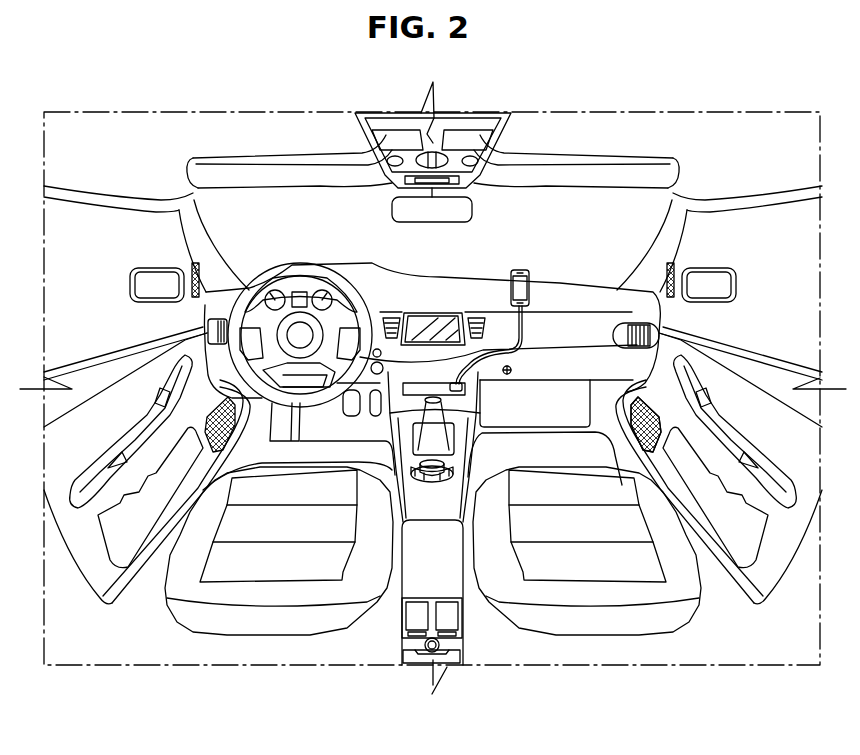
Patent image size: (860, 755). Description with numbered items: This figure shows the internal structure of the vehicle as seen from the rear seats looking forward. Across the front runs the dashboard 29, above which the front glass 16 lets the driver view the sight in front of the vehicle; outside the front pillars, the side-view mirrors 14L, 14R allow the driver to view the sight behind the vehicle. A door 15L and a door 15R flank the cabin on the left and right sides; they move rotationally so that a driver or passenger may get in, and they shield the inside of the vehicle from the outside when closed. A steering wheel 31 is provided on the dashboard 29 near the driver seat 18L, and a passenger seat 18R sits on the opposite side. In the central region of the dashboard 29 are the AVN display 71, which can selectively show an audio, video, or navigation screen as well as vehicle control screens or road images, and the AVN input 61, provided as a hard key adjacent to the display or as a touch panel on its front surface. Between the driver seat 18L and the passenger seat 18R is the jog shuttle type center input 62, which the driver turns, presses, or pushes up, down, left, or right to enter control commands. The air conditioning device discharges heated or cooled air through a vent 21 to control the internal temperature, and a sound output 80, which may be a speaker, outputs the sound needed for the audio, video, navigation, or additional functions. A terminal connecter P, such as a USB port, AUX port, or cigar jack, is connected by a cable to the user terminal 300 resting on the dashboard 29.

The side-view mirror 14L is at (150, 280).
The side-view mirror 14R is at (715, 280).
The door 15L is at (72, 433).
The door 15R is at (794, 433).
The front glass 16 is at (542, 197).
The driver seat 18L is at (258, 620).
The passenger seat 18R is at (590, 620).
The vent 21 is at (208, 330).
The dashboard 29 is at (587, 293).
The steering wheel 31 is at (258, 280).
The AVN input 61 is at (460, 313).
The AVN display 71 is at (425, 312).
The mobile terminal 300 is at (518, 268).
The center input 62 is at (445, 471).
The sound output 80 is at (652, 443).
The terminal connecter P is at (463, 388).